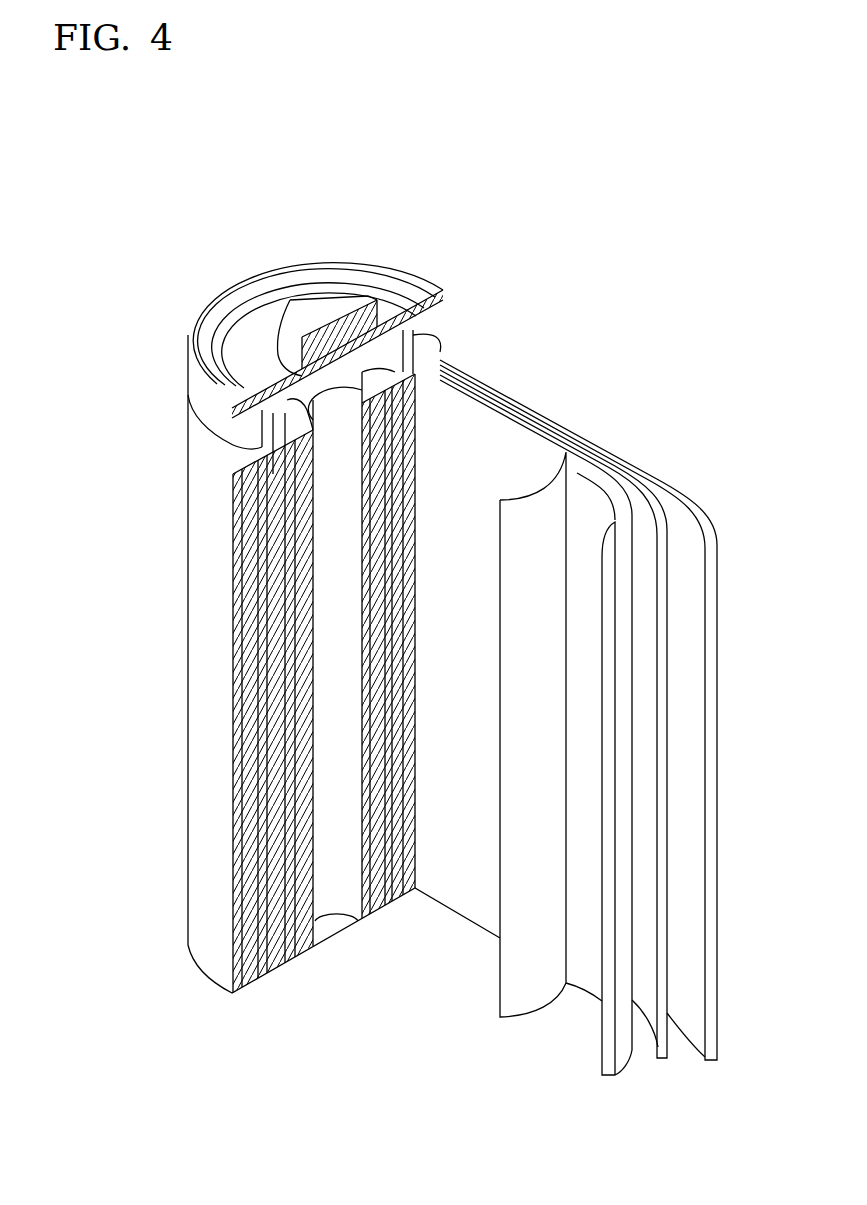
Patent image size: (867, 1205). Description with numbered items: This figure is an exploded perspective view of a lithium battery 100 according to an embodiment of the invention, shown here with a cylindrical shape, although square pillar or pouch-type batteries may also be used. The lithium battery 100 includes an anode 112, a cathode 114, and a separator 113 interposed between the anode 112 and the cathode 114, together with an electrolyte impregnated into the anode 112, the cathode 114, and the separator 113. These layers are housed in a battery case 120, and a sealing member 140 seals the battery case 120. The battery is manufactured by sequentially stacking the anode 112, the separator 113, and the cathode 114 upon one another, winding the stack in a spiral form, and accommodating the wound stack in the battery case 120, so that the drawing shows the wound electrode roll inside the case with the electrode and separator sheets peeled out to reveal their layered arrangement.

The lithium battery 100 is at (372, 208).
The anode 112 is at (697, 513).
The separator 113 is at (562, 465).
The cathode 114 is at (587, 473).
The battery case 120 is at (200, 678).
The sealing member 140 is at (320, 306).